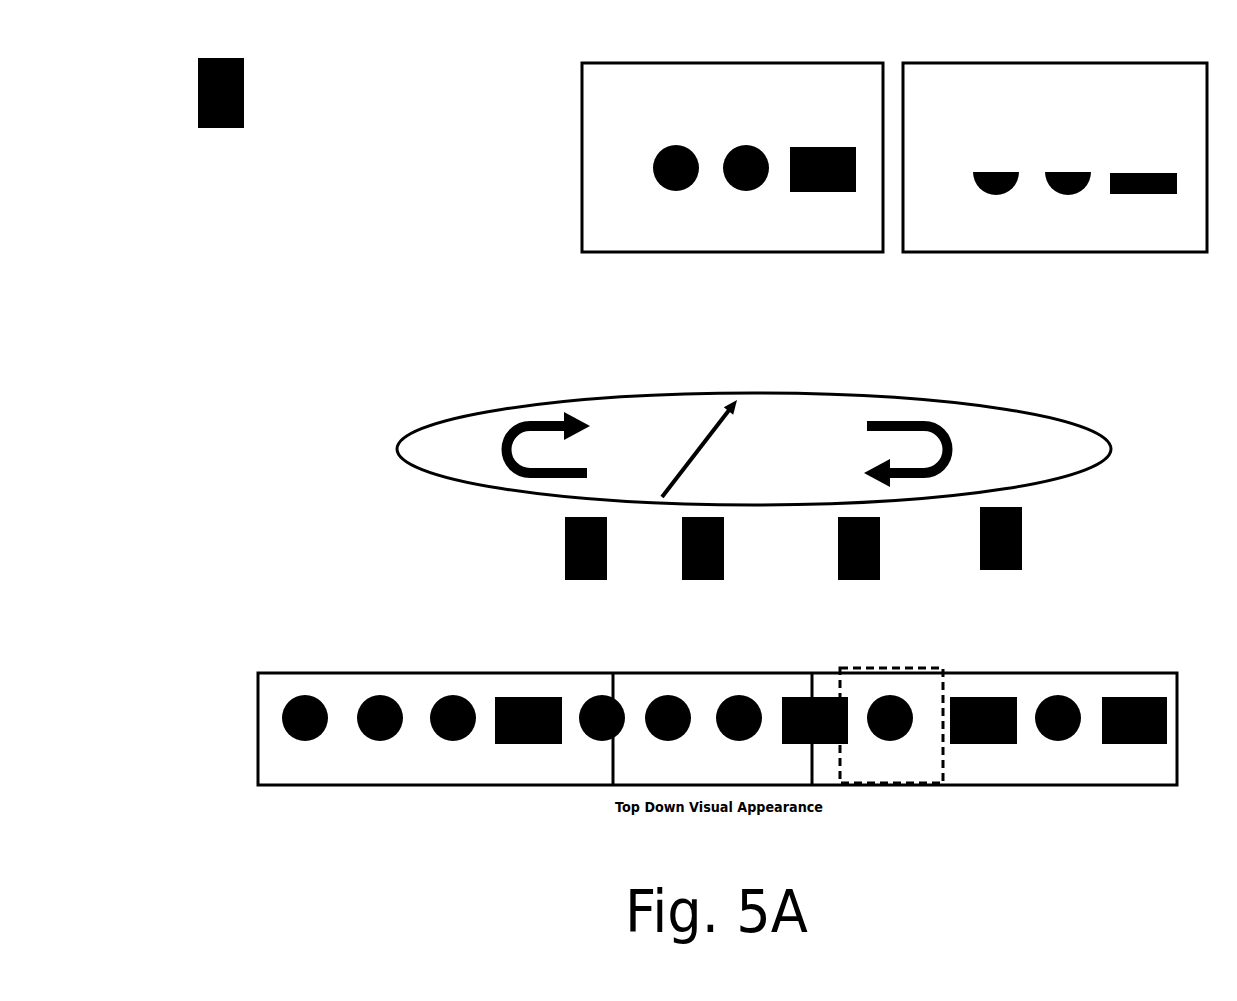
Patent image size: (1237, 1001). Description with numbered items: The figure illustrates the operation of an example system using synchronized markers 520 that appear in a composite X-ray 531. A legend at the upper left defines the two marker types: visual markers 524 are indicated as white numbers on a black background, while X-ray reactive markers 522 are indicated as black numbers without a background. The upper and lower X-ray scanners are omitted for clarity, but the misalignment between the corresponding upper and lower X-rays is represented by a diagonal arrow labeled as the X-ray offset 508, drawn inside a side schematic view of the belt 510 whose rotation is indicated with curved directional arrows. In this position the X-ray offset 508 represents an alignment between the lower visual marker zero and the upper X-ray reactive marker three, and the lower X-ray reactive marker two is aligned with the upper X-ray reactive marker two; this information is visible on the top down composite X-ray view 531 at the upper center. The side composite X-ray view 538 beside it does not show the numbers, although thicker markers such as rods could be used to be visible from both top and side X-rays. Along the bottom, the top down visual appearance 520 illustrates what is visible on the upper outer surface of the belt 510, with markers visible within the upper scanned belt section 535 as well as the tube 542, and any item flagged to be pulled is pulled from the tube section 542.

The X-ray offset 508 is at (698, 447).
The belt 510 is at (434, 428).
The synchronized markers 520 is at (839, 801).
The X-ray reactive marker 522 is at (218, 185).
The visual marker 524 is at (226, 58).
The top down composite X-ray view 531 is at (790, 62).
The upper scanned belt section 535 is at (703, 678).
The side composite X-ray view 538 is at (1103, 62).
The tube 542 is at (901, 668).